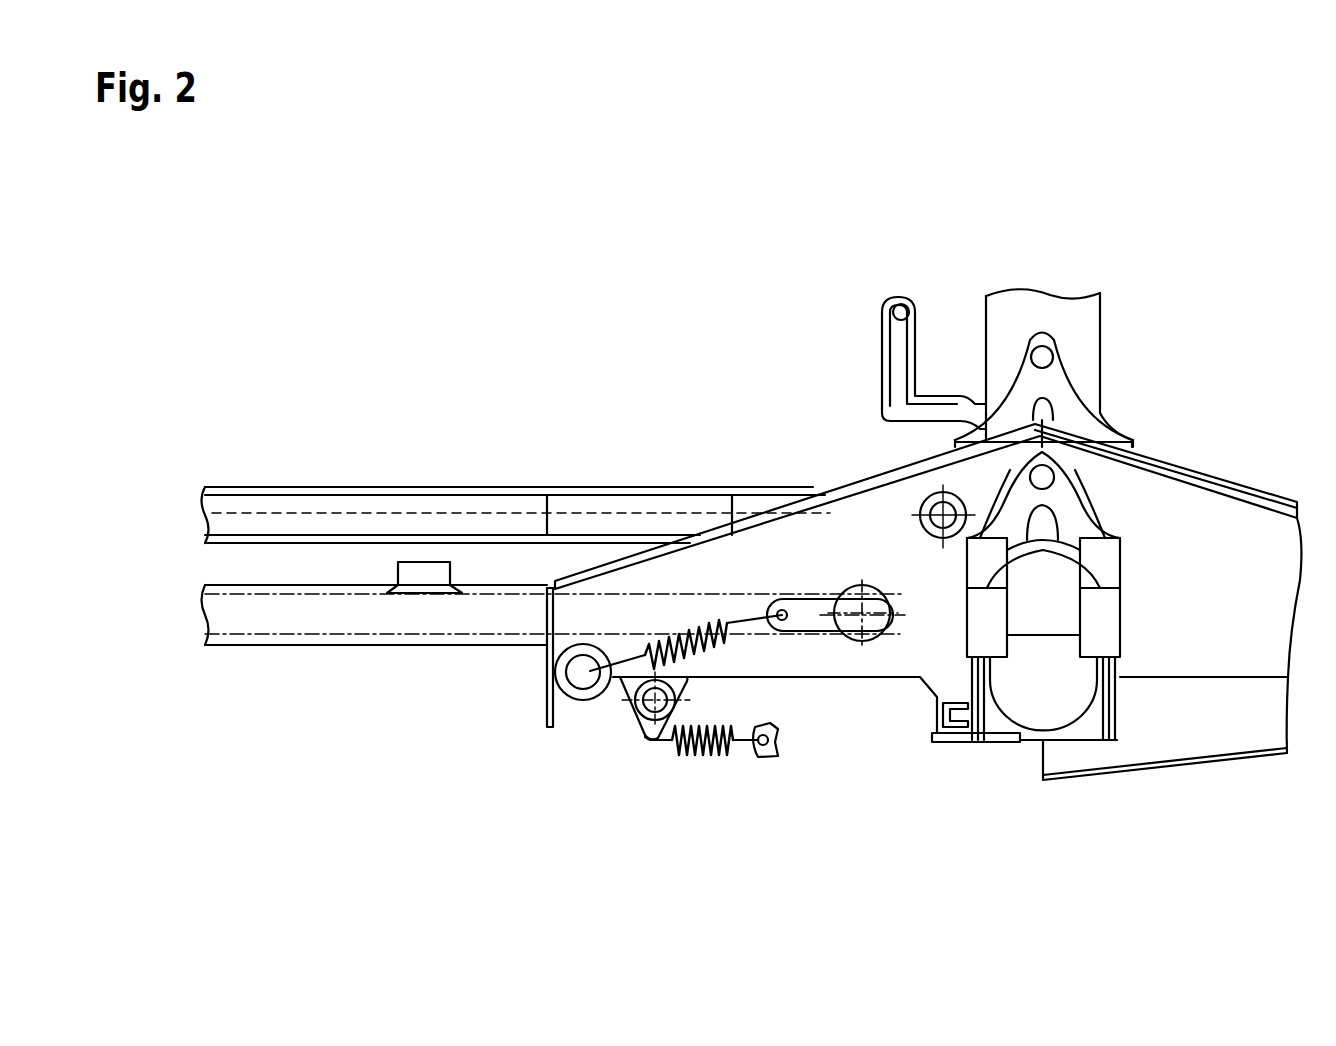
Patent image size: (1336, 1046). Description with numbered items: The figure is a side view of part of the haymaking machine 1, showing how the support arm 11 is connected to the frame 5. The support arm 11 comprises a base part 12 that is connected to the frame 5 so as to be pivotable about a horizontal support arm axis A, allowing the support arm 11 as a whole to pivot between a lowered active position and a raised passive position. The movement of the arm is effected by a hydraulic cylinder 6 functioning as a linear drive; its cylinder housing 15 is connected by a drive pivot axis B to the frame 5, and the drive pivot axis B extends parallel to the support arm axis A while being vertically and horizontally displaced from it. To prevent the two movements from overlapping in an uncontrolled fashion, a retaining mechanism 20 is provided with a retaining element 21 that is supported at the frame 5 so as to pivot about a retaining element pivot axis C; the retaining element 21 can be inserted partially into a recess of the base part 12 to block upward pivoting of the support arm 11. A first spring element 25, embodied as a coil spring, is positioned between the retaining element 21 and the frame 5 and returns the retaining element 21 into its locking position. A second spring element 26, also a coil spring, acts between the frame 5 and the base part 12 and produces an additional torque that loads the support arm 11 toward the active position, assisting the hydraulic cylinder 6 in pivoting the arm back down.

The actuating device 1 is at (560, 280).
The frame 5 is at (1162, 385).
The hydraulic cylinder 6 is at (420, 438).
The support arm 11 is at (358, 668).
The base part 12 is at (425, 649).
The cylinder housing 15 is at (487, 486).
The retaining mechanism 20 is at (597, 740).
The retaining element 21 is at (683, 692).
The first spring element 25 is at (695, 755).
The second spring element 26 is at (658, 635).
The support arm axis A is at (873, 625).
The drive pivot axis B is at (922, 512).
The retaining element pivot axis C is at (637, 717).